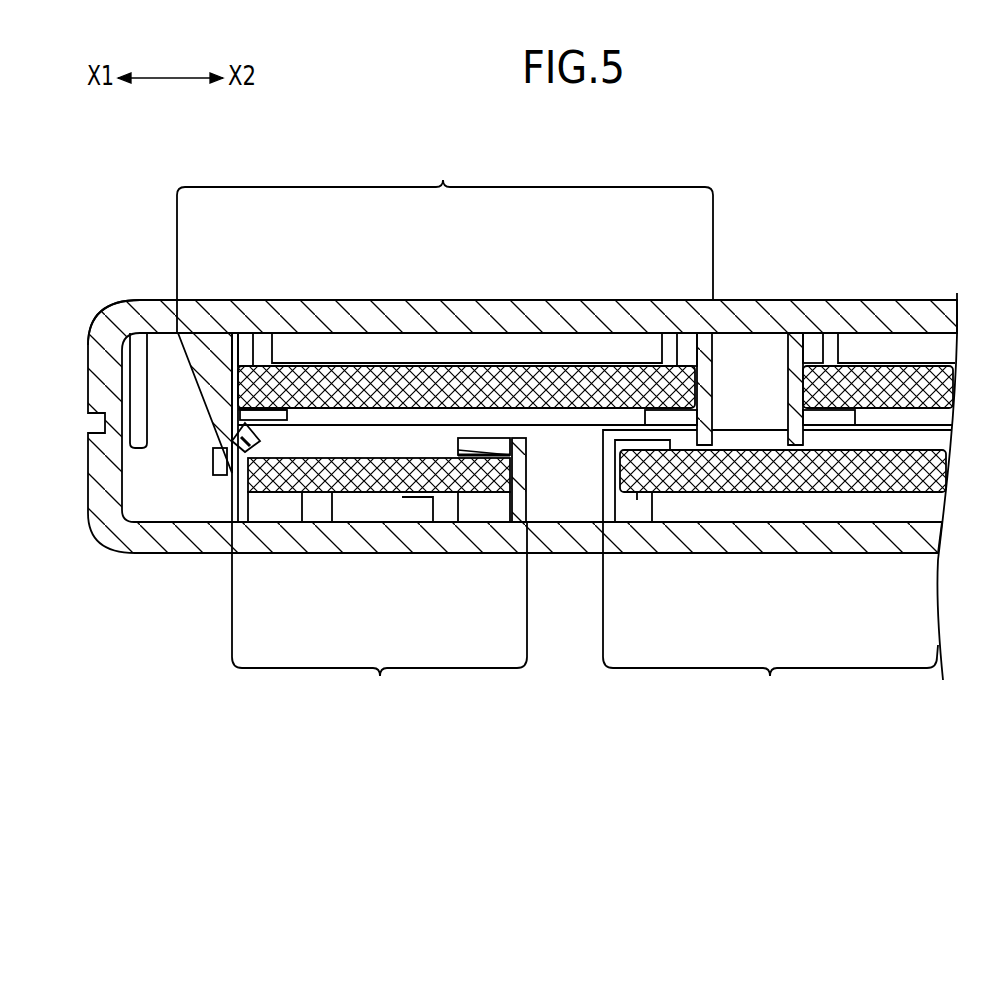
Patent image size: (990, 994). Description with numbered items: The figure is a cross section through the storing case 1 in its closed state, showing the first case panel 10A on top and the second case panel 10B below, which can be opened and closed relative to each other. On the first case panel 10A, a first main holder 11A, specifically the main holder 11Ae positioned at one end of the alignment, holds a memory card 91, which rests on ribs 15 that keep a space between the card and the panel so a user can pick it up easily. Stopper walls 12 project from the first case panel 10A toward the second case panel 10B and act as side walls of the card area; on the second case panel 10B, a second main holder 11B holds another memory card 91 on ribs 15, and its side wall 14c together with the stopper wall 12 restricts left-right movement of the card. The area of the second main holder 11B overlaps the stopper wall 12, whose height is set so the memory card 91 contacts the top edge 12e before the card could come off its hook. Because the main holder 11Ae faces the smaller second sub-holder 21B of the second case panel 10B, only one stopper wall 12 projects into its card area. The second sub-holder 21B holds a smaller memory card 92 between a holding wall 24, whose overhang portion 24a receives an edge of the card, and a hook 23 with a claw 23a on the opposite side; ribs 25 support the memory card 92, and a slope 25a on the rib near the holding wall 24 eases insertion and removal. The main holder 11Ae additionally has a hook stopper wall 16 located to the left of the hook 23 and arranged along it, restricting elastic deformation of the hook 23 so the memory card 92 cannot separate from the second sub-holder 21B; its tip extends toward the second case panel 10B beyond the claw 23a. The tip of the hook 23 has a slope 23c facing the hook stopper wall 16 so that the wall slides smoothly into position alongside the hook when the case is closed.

The storing case 1 is at (855, 226).
The first case panel 10A is at (893, 305).
The second case panel 10B is at (887, 537).
The first main holder 11A is at (445, 236).
The main holder at end of alignment 11Ae is at (445, 236).
The second main holder 11B is at (770, 618).
The stopper wall 12 is at (790, 393).
The top edge of stopper wall 12e is at (797, 447).
The side wall 14c is at (607, 476).
The rib 15 is at (266, 356).
The hook stopper wall 16 is at (220, 385).
The second sub-holder 21B is at (379, 620).
The hook 23 is at (237, 492).
The claw 23a is at (262, 440).
The slope 23c is at (232, 432).
The holding wall 24 is at (523, 477).
The overhang portion 24a is at (498, 442).
The rib 25 is at (382, 505).
The slope 25a is at (440, 499).
The memory card 91 is at (472, 390).
The memory card 92 is at (343, 477).